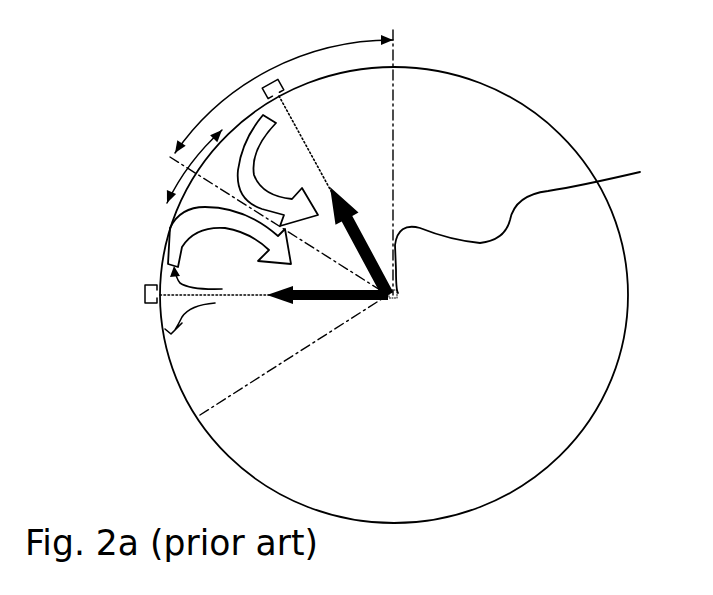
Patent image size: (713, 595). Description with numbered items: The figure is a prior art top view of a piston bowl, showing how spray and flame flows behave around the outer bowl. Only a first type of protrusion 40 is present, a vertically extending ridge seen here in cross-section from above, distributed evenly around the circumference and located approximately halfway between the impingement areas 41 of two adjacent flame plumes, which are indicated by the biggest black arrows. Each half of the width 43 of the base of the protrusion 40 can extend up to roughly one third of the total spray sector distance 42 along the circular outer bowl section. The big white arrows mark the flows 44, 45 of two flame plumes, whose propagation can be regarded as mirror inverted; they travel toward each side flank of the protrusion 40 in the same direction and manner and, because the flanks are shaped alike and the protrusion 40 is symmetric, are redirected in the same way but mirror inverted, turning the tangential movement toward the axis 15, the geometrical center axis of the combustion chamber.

The axis 15 is at (640, 172).
The first type of protrusion 40 is at (178, 190).
The impingement area 41 is at (145, 293).
The total spray sector distance 42 is at (306, 50).
The width of the base of the first type of protrusion 43 is at (180, 172).
The flow 44 is at (171, 228).
The flow 45 is at (236, 90).